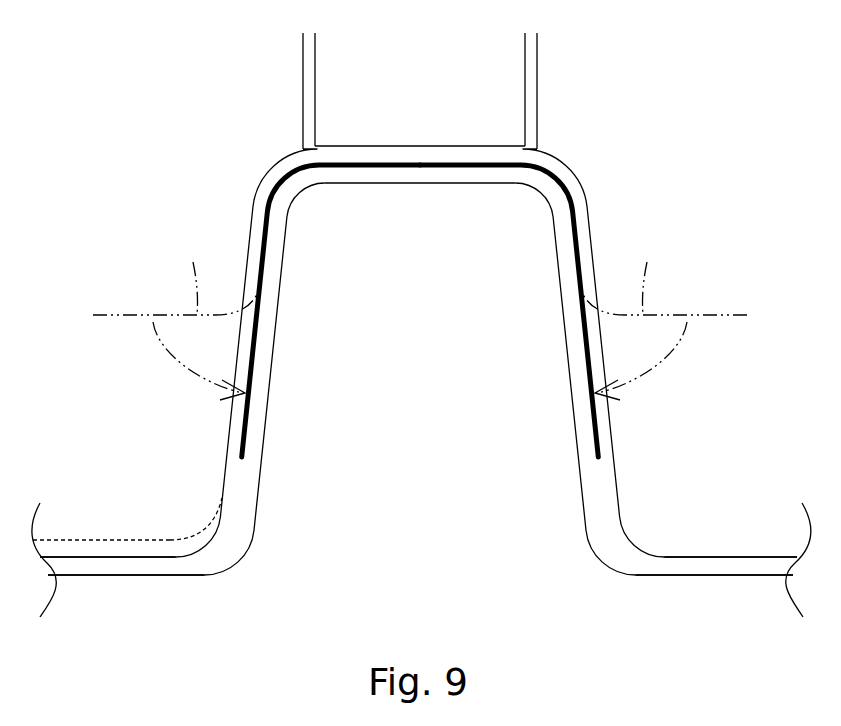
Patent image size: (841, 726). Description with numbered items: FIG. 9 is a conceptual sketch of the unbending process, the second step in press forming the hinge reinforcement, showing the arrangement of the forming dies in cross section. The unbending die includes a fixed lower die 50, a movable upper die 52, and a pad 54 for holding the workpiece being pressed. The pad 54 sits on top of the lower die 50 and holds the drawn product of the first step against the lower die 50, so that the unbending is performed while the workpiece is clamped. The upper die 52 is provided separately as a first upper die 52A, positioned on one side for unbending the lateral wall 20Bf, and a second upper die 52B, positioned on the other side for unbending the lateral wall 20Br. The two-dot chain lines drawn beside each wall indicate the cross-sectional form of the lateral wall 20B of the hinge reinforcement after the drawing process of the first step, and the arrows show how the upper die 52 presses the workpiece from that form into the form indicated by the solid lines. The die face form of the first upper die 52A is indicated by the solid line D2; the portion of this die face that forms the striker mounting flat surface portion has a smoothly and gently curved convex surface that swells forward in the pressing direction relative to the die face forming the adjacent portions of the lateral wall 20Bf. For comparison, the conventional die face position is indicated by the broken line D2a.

The pad 54 is at (433, 98).
The fixed lower die 50 is at (437, 343).
The lateral wall 20B is at (420, 300).
The lateral wall 20Bf is at (263, 248).
The lateral wall 20Br is at (577, 248).
The movable upper die 52 is at (421, 506).
The first upper die 52A is at (113, 429).
The second upper die 52B is at (708, 459).
The solid line D2 is at (90, 557).
The broken line D2a is at (142, 540).